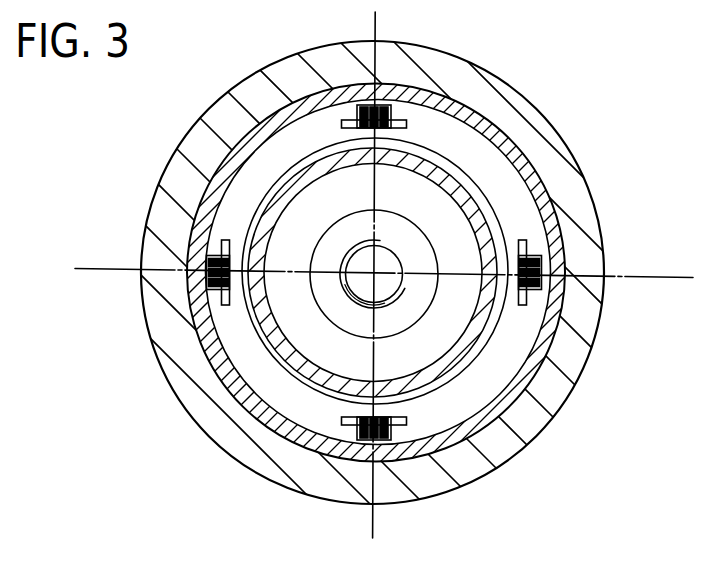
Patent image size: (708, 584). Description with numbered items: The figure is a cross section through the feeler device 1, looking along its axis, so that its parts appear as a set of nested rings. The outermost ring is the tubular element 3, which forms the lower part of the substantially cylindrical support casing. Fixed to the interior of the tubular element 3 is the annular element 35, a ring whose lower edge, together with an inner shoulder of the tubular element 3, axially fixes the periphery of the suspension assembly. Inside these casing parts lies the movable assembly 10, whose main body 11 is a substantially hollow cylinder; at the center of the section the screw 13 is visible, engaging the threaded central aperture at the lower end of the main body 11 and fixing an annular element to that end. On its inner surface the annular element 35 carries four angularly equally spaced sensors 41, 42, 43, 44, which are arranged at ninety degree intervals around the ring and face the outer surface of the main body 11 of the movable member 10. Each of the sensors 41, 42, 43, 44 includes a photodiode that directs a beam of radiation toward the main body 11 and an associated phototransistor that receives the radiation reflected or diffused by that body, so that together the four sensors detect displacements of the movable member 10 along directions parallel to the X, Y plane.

The feeler device 1 is at (605, 85).
The tubular element 3 is at (570, 206).
The movable assembly 10 is at (447, 393).
The main body 11 is at (453, 192).
The screw 13 is at (387, 269).
The annular element 35 is at (285, 142).
The sensor 41 is at (242, 243).
The sensor 42 is at (516, 296).
The sensor 43 is at (398, 416).
The sensor 44 is at (402, 144).